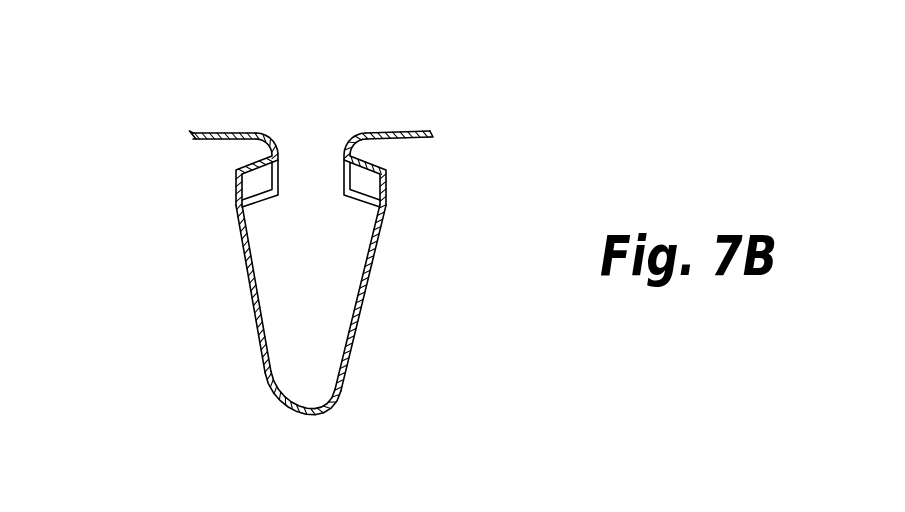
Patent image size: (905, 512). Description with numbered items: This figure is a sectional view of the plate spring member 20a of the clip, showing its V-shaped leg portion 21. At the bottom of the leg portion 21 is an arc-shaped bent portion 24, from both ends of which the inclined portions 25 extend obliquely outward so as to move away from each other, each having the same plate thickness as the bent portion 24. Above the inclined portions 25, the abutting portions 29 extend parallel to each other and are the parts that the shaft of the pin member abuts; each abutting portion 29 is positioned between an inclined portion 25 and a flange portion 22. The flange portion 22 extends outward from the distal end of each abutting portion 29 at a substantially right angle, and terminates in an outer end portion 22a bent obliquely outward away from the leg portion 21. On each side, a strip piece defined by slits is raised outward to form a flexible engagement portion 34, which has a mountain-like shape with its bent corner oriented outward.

The plate spring member 20a is at (443, 109).
The leg portion 21 is at (385, 326).
The flange portion 22 is at (233, 131).
The outer end portion 22a is at (188, 139).
The bent portion 24 is at (310, 414).
The inclined portion 25 is at (247, 292).
The abutting portion 29 is at (342, 174).
The engagement portion 34 is at (236, 185).